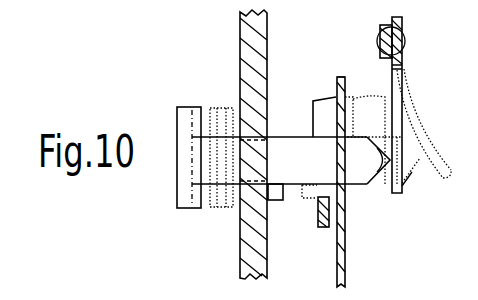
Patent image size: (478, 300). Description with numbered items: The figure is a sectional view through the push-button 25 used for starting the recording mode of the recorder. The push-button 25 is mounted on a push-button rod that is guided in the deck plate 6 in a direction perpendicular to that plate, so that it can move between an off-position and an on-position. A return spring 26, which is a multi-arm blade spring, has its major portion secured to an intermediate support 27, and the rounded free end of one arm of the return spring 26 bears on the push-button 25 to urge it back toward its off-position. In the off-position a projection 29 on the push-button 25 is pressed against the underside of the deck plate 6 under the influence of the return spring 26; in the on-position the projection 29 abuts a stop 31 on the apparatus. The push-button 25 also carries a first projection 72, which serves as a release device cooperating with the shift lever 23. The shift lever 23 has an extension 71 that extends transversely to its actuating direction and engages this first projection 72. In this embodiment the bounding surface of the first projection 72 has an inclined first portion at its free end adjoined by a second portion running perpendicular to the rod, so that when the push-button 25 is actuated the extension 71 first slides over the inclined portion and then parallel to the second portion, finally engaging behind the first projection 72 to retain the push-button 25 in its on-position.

The deck plate 6 is at (248, 28).
The shift lever 23 is at (347, 217).
The push-button 25 is at (175, 145).
The return spring 26 is at (400, 191).
The intermediate support 27 is at (380, 29).
The projection 29 is at (276, 200).
The stop 31 is at (323, 228).
The extension 71 is at (347, 93).
The first projection 72 is at (320, 107).